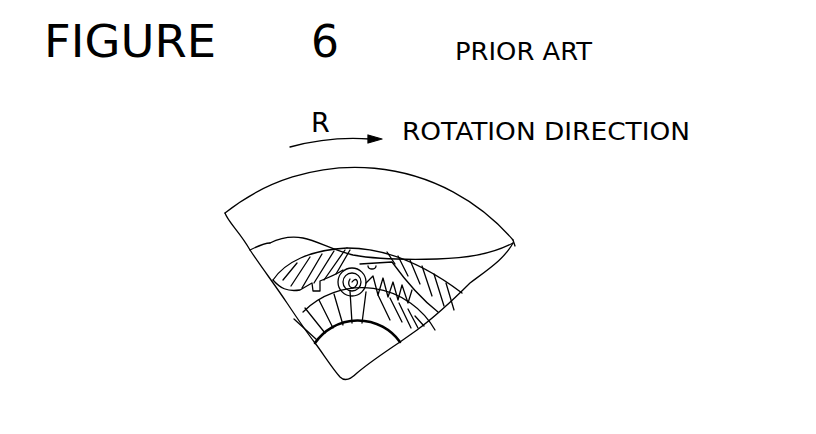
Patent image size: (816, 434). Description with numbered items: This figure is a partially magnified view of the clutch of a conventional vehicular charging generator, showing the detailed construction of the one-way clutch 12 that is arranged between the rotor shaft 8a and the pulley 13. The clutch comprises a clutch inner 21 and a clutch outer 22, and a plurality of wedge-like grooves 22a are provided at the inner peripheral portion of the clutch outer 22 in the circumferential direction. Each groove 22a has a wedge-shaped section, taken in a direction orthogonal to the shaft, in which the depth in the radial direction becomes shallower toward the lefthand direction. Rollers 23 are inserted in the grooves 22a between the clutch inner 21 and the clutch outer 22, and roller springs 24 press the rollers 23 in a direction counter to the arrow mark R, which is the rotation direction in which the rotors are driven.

The pulley 13 is at (455, 188).
The wedge-like grooves 22a is at (515, 244).
The clutch outer 22 is at (466, 284).
The rollers 23 is at (250, 252).
The one-way clutch 12 is at (285, 293).
The clutch inner 21 is at (303, 330).
The roller springs 24 is at (430, 325).
The rotor shaft 8a is at (367, 350).